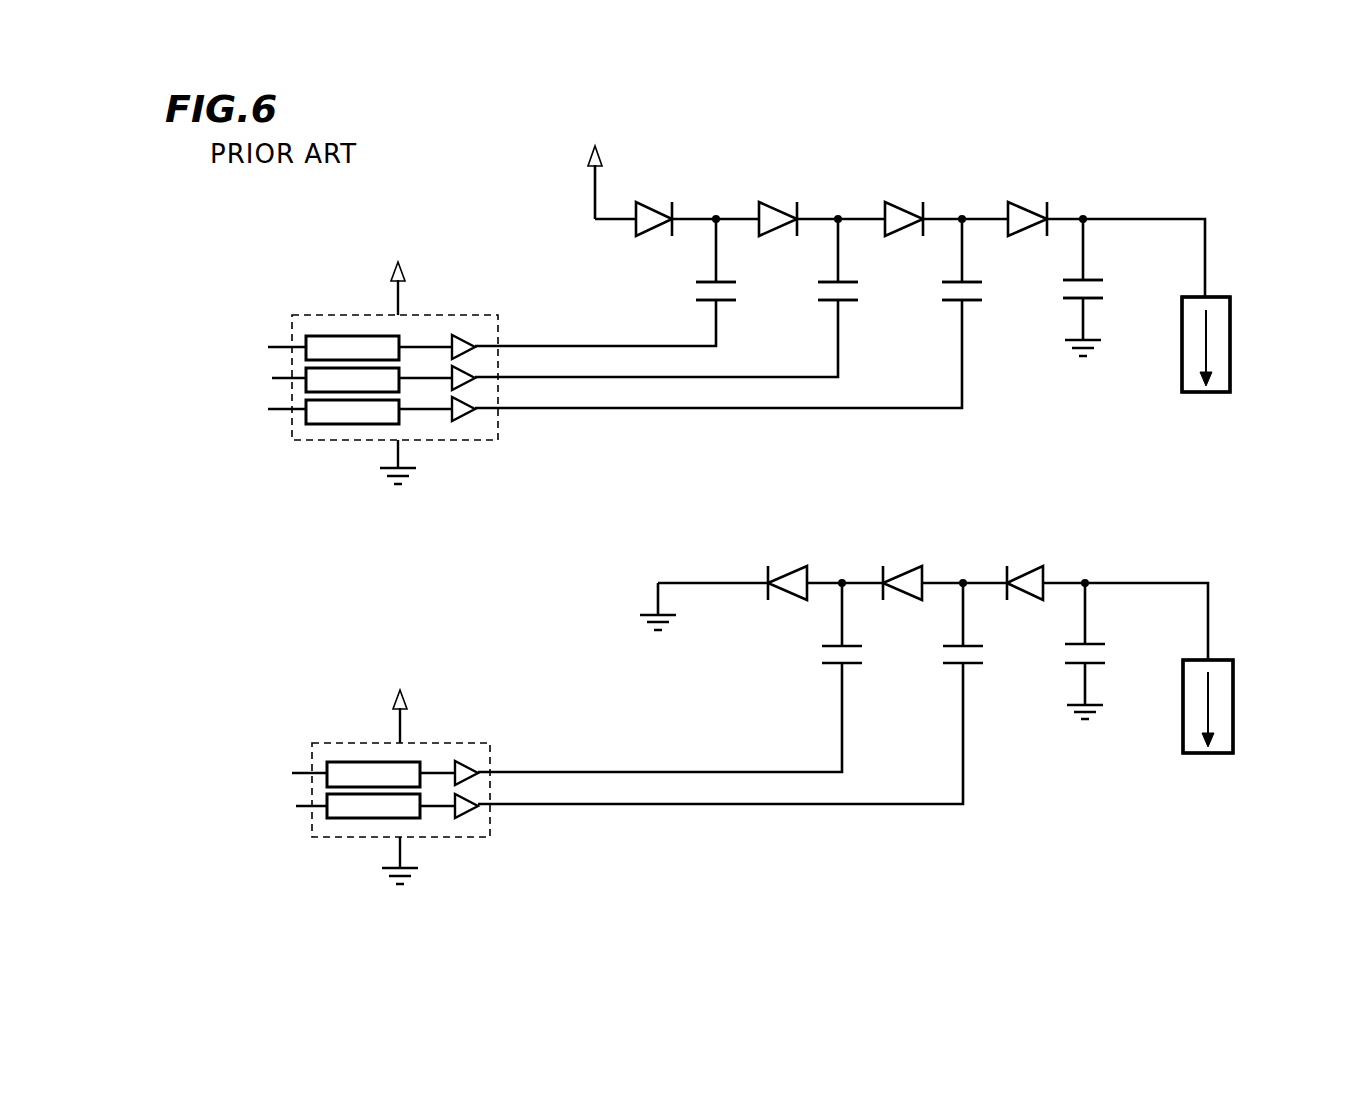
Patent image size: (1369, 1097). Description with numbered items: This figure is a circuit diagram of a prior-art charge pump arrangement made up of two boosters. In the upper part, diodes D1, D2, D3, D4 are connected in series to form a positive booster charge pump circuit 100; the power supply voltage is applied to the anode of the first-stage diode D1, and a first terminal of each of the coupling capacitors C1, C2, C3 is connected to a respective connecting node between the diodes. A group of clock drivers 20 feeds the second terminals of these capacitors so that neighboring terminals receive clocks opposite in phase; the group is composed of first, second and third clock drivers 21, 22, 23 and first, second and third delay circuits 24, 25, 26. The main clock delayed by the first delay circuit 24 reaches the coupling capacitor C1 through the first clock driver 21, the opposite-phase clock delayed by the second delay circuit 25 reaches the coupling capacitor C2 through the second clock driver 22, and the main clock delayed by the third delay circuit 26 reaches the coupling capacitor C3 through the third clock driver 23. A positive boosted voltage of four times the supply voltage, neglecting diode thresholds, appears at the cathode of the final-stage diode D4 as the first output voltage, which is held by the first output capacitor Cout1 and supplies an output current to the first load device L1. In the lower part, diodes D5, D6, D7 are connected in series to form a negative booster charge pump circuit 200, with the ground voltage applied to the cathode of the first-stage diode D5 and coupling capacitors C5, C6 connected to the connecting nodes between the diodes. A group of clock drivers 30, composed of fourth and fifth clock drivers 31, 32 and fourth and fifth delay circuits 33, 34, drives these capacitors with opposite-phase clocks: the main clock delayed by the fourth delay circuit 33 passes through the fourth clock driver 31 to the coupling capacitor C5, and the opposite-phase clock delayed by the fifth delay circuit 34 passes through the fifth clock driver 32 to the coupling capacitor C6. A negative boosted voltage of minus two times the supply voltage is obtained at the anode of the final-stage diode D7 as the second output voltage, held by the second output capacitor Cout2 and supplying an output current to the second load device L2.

The positive booster charge pump circuit 100 is at (892, 258).
The negative booster charge pump circuit 200 is at (891, 743).
The group of clock drivers 20 is at (376, 376).
The first clock driver 21 is at (470, 338).
The second clock driver 22 is at (470, 386).
The third clock driver 23 is at (468, 418).
The first delay circuit 24 is at (392, 336).
The second delay circuit 25 is at (306, 391).
The third delay circuit 26 is at (338, 425).
The group of clock drivers 30 is at (403, 787).
The fourth clock driver 31 is at (474, 766).
The fifth clock driver 32 is at (472, 812).
The fourth delay circuit 33 is at (412, 762).
The fifth delay circuit 34 is at (356, 818).
The diode D1 is at (660, 198).
The diode D2 is at (782, 198).
The diode D3 is at (905, 198).
The diode D4 is at (1029, 198).
The diode D5 is at (785, 602).
The diode D6 is at (902, 600).
The diode D7 is at (1028, 600).
The coupling capacitor C1 is at (740, 295).
The coupling capacitor C2 is at (863, 295).
The coupling capacitor C3 is at (980, 295).
The coupling capacitor C5 is at (823, 658).
The coupling capacitor C6 is at (940, 658).
The first output capacitor Cout1 is at (1066, 296).
The second output capacitor Cout2 is at (1065, 657).
The first load device L1 is at (1243, 380).
The second load device L2 is at (1240, 738).